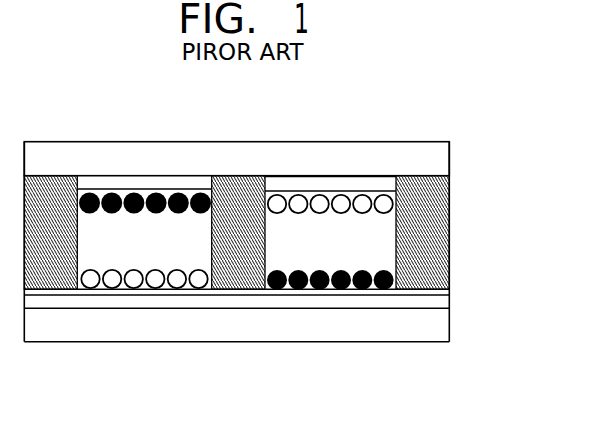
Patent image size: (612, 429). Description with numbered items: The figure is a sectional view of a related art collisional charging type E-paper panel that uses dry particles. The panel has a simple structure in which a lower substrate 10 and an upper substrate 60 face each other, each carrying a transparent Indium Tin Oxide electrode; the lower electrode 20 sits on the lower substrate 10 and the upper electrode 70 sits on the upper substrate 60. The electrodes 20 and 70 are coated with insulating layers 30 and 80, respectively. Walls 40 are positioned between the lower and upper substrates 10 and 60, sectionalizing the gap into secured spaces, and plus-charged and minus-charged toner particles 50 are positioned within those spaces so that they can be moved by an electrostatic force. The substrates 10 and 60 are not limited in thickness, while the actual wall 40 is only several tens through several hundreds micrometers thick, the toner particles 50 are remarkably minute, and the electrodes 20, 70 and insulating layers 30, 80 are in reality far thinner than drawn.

The lower substrate 10 is at (185, 328).
The transparent electrode 20 is at (130, 301).
The insulating layer 30 is at (73, 292).
The wall 40 is at (430, 234).
The toner particles 50 is at (236, 242).
The upper substrate 60 is at (249, 155).
The transparent electrode 70 is at (313, 183).
The insulating layer 80 is at (372, 192).